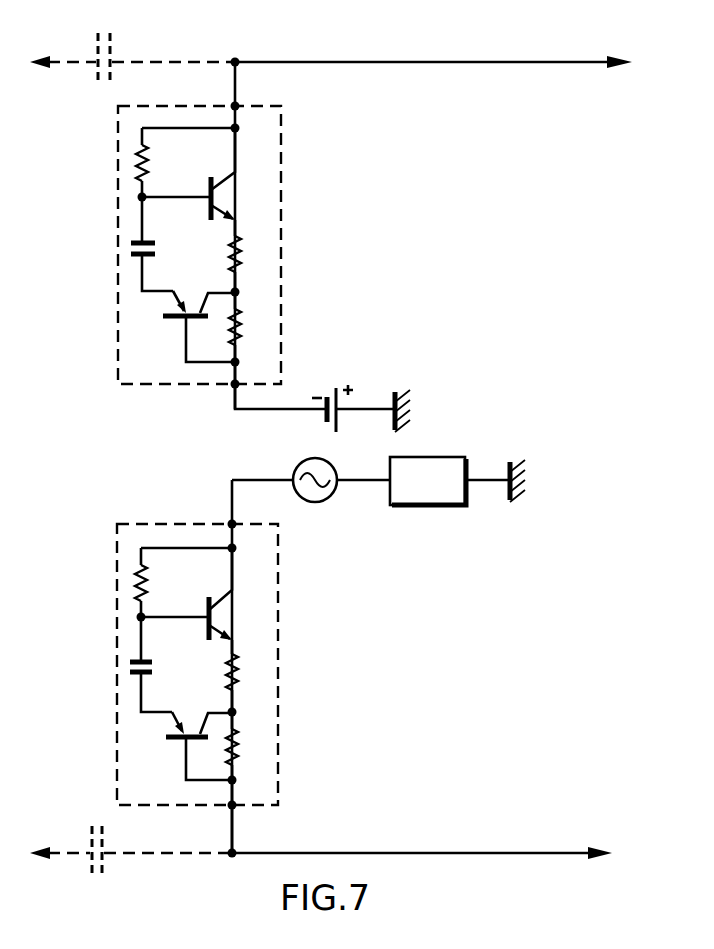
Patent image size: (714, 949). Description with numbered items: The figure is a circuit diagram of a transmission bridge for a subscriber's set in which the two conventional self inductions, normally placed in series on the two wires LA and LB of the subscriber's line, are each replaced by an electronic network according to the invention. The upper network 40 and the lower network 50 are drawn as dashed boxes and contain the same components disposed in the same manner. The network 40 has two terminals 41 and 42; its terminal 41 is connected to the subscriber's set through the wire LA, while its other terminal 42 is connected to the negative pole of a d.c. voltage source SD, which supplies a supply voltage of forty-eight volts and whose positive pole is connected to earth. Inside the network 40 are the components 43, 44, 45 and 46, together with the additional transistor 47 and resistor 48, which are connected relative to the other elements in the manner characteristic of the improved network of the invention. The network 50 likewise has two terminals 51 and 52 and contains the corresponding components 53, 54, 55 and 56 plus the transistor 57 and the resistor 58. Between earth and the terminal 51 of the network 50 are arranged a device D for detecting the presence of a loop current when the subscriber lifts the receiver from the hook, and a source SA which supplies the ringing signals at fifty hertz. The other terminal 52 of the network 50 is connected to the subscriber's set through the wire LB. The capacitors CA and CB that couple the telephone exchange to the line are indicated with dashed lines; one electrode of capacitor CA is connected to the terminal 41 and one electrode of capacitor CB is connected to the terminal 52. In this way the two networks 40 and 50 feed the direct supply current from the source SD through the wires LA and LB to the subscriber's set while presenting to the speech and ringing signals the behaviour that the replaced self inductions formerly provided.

The circuit 40 is at (282, 150).
The terminal 41 is at (237, 104).
The terminal 42 is at (233, 386).
The component 43 is at (216, 195).
The component 44 is at (243, 248).
The component 45 is at (146, 150).
The component 46 is at (150, 242).
The transistor 47 is at (190, 308).
The resistor 48 is at (243, 312).
The circuit 50 is at (279, 580).
The terminal 51 is at (230, 522).
The terminal 52 is at (234, 808).
The component 53 is at (215, 617).
The component 54 is at (240, 666).
The component 55 is at (170, 560).
The component 56 is at (147, 661).
The transistor 57 is at (190, 735).
The resistor 58 is at (238, 730).
The wire LA is at (500, 66).
The wire LB is at (472, 853).
The capacitor CA is at (96, 41).
The capacitor CB is at (91, 835).
The d.c. voltage source SD is at (330, 391).
The source SA is at (298, 463).
The device D is at (441, 457).